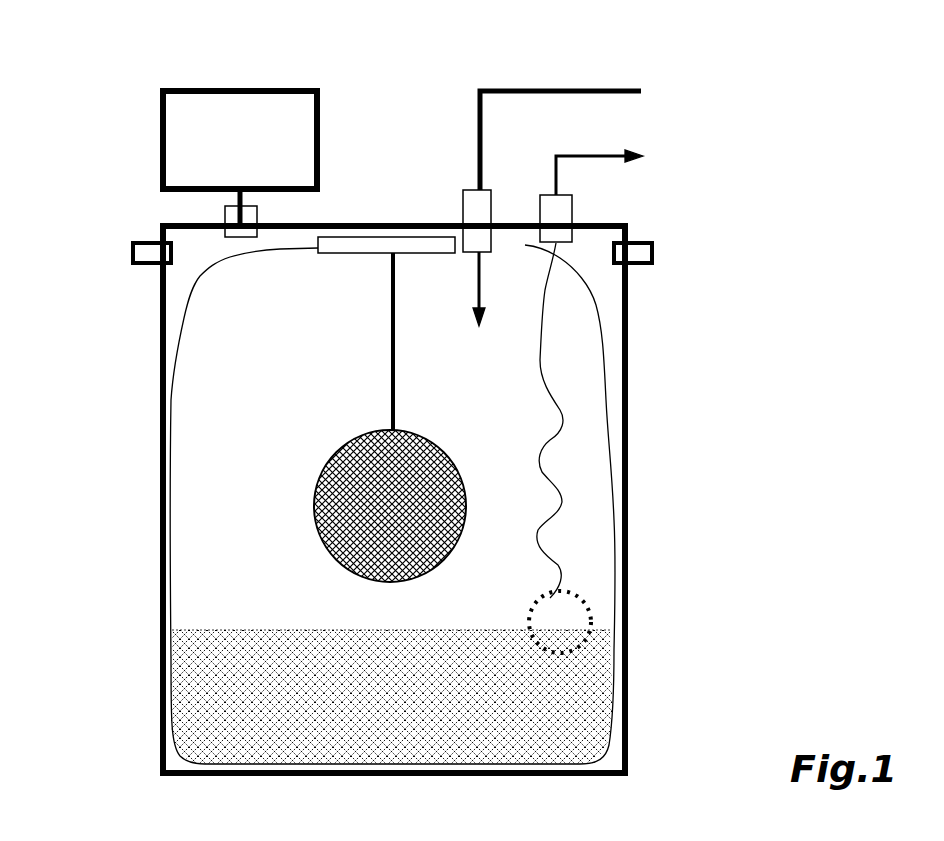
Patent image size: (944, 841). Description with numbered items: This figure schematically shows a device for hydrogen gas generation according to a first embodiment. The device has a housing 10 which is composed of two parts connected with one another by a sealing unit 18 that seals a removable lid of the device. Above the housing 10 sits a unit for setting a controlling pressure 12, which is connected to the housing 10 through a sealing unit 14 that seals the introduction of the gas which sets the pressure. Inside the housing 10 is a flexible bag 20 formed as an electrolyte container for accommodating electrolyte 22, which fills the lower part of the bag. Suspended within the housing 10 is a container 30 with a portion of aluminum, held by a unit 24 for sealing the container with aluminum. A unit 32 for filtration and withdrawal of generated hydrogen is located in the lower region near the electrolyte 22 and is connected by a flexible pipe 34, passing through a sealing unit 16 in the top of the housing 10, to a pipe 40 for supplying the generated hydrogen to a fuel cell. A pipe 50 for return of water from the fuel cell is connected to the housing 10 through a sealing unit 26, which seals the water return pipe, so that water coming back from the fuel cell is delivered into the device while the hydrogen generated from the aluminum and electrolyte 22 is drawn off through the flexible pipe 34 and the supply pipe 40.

The housing 10 is at (162, 320).
The unit for setting a controlling pressure 12 is at (178, 153).
The sealing unit 14 is at (250, 216).
The unit for sealing a pipe for supply of generated hydrogen 16 is at (572, 220).
The unit for sealing a removable lid 18 is at (133, 250).
The flexible bag 20 is at (182, 354).
The electrolyte 22 is at (200, 656).
The unit for sealing the container with aluminum 24 is at (388, 254).
The unit for sealing a pipe for return of water 26 is at (470, 256).
The container with a portion of aluminum 30 is at (316, 505).
The unit for filtration and withdrawal of generated hydrogen 32 is at (535, 604).
The flexible pipe 34 is at (548, 418).
The pipe for supplying generated hydrogen 40 is at (600, 153).
The pipe for return of water 50 is at (600, 86).